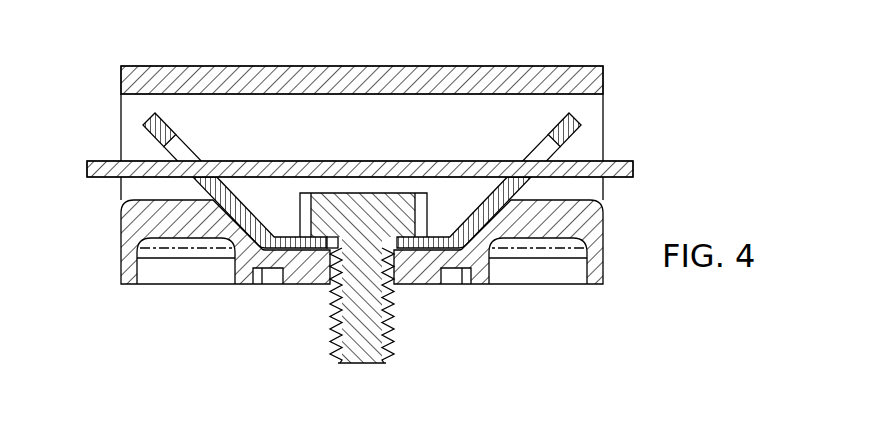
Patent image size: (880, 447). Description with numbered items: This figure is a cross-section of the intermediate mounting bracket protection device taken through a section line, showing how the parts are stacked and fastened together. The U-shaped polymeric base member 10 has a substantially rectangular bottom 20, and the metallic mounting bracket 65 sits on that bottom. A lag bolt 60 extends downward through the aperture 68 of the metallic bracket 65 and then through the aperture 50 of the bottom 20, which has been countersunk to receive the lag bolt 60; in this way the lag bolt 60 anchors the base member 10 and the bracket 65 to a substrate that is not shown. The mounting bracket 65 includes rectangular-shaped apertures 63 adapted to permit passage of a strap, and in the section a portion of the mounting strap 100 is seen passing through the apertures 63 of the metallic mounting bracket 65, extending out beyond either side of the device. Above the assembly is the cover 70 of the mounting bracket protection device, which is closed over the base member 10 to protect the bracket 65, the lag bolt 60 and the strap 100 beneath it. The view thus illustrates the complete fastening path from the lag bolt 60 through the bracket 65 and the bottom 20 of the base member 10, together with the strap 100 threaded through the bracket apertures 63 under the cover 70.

The base member 10 is at (636, 274).
The bottom 20 is at (110, 238).
The aperture 50 is at (388, 268).
The lag bolt 60 is at (405, 330).
The apertures 63 is at (196, 150).
The mounting bracket 65 is at (165, 140).
The aperture 68 is at (330, 247).
The cover 70 is at (360, 58).
The mounting strap 100 is at (86, 169).